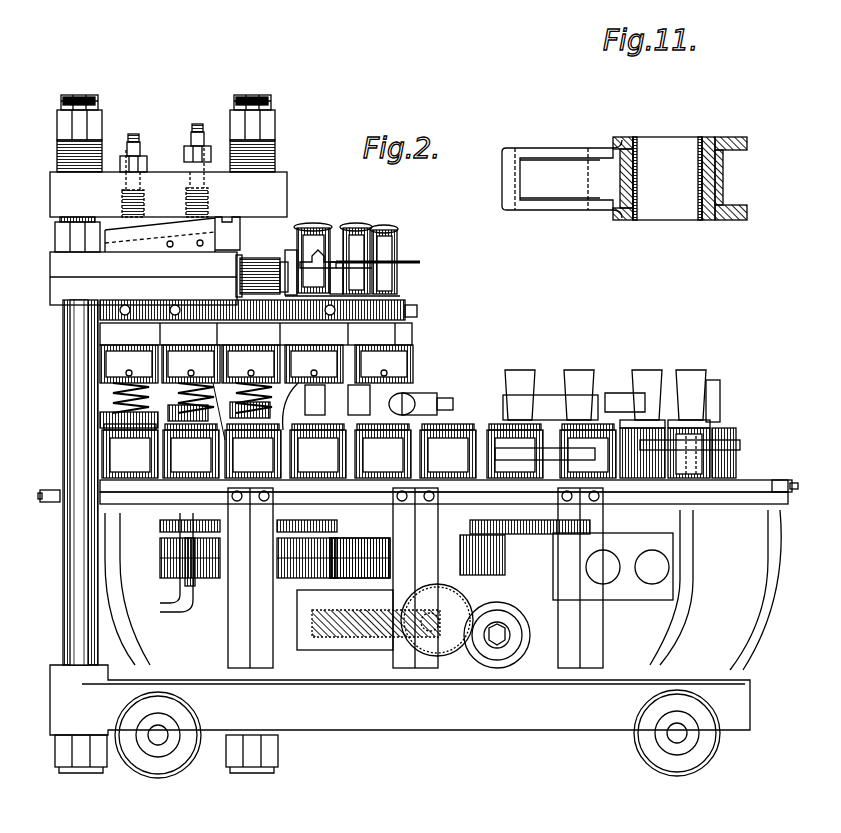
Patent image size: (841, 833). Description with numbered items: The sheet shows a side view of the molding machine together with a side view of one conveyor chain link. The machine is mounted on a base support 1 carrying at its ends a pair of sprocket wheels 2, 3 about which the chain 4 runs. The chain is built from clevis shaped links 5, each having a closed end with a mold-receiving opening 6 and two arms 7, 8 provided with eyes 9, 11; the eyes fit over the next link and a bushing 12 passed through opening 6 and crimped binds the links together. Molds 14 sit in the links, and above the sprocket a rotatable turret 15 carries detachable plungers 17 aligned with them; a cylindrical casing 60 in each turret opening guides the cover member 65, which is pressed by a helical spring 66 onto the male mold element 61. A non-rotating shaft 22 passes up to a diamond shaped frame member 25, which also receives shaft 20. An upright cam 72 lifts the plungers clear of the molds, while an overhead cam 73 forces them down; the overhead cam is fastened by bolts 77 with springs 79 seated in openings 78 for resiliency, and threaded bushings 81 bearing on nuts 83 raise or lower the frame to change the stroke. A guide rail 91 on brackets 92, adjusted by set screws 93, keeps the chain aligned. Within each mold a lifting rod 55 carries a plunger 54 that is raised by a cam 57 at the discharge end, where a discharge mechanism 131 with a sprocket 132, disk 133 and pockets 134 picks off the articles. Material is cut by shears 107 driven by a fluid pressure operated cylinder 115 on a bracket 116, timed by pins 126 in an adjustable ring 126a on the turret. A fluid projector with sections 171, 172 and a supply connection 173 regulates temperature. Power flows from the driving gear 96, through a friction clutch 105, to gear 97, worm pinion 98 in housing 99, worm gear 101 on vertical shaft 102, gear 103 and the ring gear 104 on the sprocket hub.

In FIG. 2, the base support 1 is at (610, 712).
In FIG. 2, the sprocket wheel 2 is at (172, 535).
In FIG. 2, the sprocket wheel 3 is at (478, 536).
In FIG. 2, the chain 4 is at (740, 483).
In FIG. 11, the clevis shaped link 5 is at (720, 182).
In FIG. 11, the mold-receiving opening 6 is at (520, 157).
In FIG. 11, the arm 7 is at (618, 138).
In FIG. 11, the arm 8 is at (622, 218).
In FIG. 11, the eye 9 is at (637, 138).
In FIG. 11, the eye 11 is at (700, 220).
In FIG. 11, the bushing 12 is at (636, 220).
In FIG. 2, the mold 14 is at (765, 440).
In FIG. 2, the rotatable turret 15 is at (262, 344).
In FIG. 2, the detachable plunger 17 is at (402, 240).
In FIG. 2, the shaft 20 is at (63, 458).
In FIG. 2, the shaft 22 is at (256, 770).
In FIG. 2, the diamond shaped frame member 25 is at (175, 204).
In FIG. 2, the plunger 54 is at (650, 435).
In FIG. 2, the lifting rod 55 is at (690, 445).
In FIG. 2, the cam 57 is at (636, 585).
In FIG. 2, the cylindrical casing 60 is at (106, 360).
In FIG. 2, the male mold element 61 is at (326, 406).
In FIG. 2, the cover member 65 is at (100, 420).
In FIG. 2, the helical spring 66 is at (112, 402).
In FIG. 2, the upright cam 72 is at (255, 258).
In FIG. 2, the overhead cam 73 is at (236, 220).
In FIG. 2, the bolt 77 is at (195, 124).
In FIG. 2, the opening 78 is at (192, 190).
In FIG. 2, the spring 79 is at (124, 206).
In FIG. 2, the threaded bushing 81 is at (58, 156).
In FIG. 2, the nut 83 is at (92, 100).
In FIG. 2, the guide rail 91 is at (405, 420).
In FIG. 2, the bracket 92 is at (176, 643).
In FIG. 2, the adjusting set screw 93 is at (47, 503).
In FIG. 2, the driving gear 96 is at (470, 650).
In FIG. 2, the gear 97 is at (470, 605).
In FIG. 2, the worm pinion 98 is at (430, 635).
In FIG. 2, the housing 99 is at (365, 672).
In FIG. 2, the worm gear 101 is at (330, 645).
In FIG. 2, the vertically disposed shaft 102 is at (362, 652).
In FIG. 2, the horizontally disposed gear 103 is at (357, 562).
In FIG. 2, the ring gear 104 is at (165, 548).
In FIG. 2, the friction clutch 105 is at (493, 655).
In FIG. 2, the shears 107 is at (340, 280).
In FIG. 2, the fluid pressure operated cylinder 115 is at (262, 252).
In FIG. 2, the bracket 116 is at (60, 268).
In FIG. 2, the pin 126 is at (416, 314).
In FIG. 2, the ring 126a is at (382, 312).
In FIG. 2, the discharge mechanism 131 is at (605, 428).
In FIG. 2, the sprocket 132 is at (522, 438).
In FIG. 2, the disk 133 is at (546, 400).
In FIG. 2, the pocket 134 is at (505, 402).
In FIG. 2, the section 171 is at (375, 520).
In FIG. 2, the section 172 is at (483, 490).
In FIG. 2, the supply connection 173 is at (440, 396).